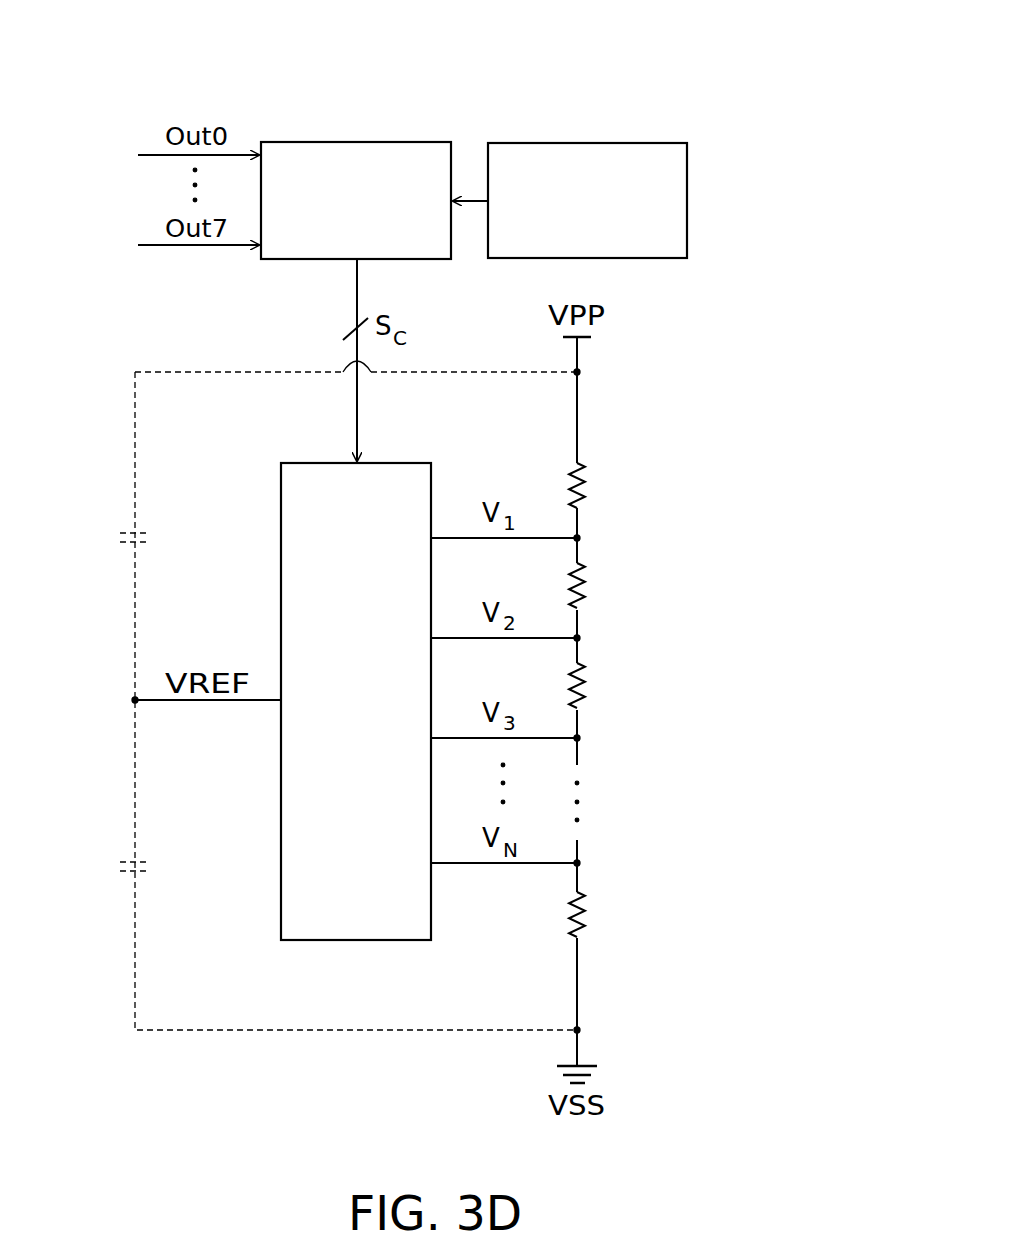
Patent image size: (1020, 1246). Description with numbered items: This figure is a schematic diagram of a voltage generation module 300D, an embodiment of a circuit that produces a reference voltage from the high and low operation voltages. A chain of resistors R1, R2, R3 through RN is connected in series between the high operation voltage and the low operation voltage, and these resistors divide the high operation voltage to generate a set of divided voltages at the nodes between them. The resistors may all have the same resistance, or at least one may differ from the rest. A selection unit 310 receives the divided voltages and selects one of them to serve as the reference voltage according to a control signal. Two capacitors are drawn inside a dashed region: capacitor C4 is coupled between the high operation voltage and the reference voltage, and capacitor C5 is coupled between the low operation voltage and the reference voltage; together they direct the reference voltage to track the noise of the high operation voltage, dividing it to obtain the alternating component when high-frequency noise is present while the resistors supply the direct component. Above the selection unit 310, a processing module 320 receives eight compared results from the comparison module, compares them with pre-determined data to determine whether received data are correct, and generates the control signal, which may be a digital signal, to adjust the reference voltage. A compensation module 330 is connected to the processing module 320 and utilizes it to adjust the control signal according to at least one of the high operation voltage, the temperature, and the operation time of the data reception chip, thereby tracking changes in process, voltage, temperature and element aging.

The voltage generation module 300D is at (733, 70).
The selection unit 310 is at (398, 463).
The processing module 320 is at (418, 142).
The compensation module 330 is at (653, 141).
The capacitor C4 is at (119, 537).
The capacitor C5 is at (119, 866).
The resistor R1 is at (588, 483).
The resistor R2 is at (588, 583).
The resistor R3 is at (588, 683).
The resistor RN is at (588, 912).